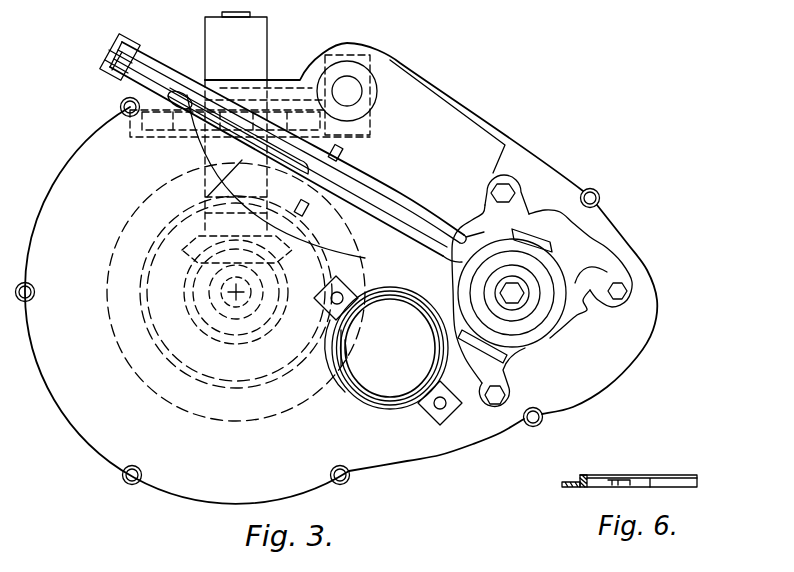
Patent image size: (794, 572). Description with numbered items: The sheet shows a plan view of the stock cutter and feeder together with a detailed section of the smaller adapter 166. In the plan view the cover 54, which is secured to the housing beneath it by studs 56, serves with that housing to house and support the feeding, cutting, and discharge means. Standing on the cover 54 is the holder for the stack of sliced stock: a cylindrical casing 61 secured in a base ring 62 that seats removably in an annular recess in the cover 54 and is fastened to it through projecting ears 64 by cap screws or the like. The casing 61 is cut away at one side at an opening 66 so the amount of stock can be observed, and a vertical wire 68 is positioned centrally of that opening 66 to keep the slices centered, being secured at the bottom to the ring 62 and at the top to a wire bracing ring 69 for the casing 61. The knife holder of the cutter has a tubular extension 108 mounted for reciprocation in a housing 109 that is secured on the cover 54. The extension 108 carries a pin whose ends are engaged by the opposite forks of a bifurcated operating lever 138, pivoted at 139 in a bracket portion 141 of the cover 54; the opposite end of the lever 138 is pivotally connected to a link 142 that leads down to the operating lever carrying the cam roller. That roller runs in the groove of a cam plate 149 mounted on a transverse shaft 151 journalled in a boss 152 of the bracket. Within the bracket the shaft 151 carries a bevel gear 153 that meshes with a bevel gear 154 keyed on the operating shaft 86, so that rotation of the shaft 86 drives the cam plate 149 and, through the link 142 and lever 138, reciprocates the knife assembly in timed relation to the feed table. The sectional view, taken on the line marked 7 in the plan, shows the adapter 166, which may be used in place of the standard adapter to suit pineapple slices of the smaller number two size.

In FIG. 3, the bracket / section line 7 is at (612, 243).
In FIG. 3, the cover 54 is at (446, 462).
In FIG. 3, the studs 56 is at (548, 412).
In FIG. 3, the cylindrical casing 61 is at (392, 404).
In FIG. 3, the base ring 62 is at (362, 406).
In FIG. 3, the projecting ears 64 is at (332, 288).
In FIG. 3, the cut-away opening 66 is at (353, 390).
In FIG. 3, the vertical wire 68 is at (346, 368).
In FIG. 3, the wire bracing ring 69 is at (346, 350).
In FIG. 3, the operating shaft 86 is at (232, 293).
In FIG. 3, the tubular extension 108 is at (520, 312).
In FIG. 3, the housing 109 is at (545, 313).
In FIG. 3, the bifurcated operating lever 138 is at (372, 198).
In FIG. 3, the pivot 139 is at (350, 150).
In FIG. 3, the bracket portion 141 is at (340, 180).
In FIG. 3, the link 142 is at (117, 60).
In FIG. 3, the cam plate 149 is at (155, 137).
In FIG. 3, the transverse shaft 151 is at (250, 14).
In FIG. 3, the boss 152 is at (262, 47).
In FIG. 3, the bevel gear 153 is at (185, 241).
In FIG. 3, the bevel gear 154 is at (180, 277).
In FIG. 6, the adapter 166 is at (683, 485).